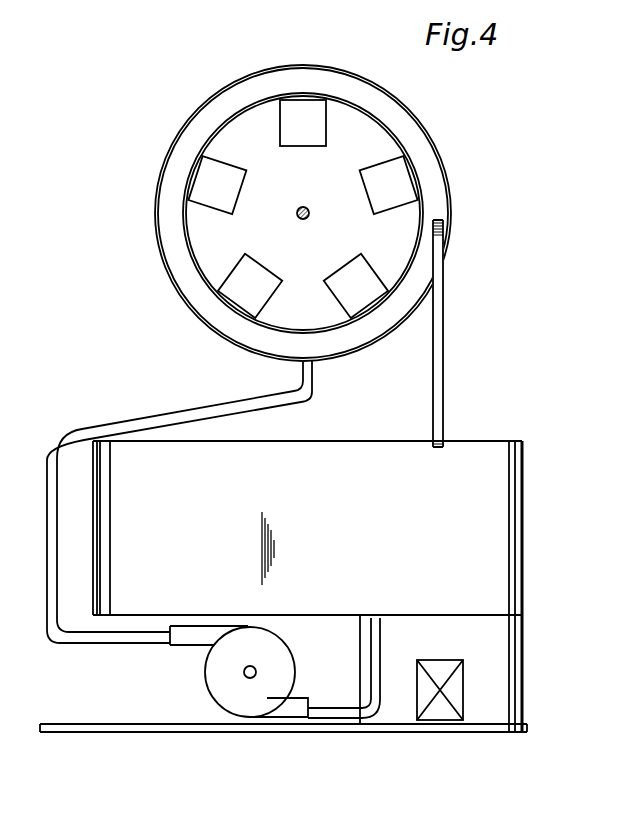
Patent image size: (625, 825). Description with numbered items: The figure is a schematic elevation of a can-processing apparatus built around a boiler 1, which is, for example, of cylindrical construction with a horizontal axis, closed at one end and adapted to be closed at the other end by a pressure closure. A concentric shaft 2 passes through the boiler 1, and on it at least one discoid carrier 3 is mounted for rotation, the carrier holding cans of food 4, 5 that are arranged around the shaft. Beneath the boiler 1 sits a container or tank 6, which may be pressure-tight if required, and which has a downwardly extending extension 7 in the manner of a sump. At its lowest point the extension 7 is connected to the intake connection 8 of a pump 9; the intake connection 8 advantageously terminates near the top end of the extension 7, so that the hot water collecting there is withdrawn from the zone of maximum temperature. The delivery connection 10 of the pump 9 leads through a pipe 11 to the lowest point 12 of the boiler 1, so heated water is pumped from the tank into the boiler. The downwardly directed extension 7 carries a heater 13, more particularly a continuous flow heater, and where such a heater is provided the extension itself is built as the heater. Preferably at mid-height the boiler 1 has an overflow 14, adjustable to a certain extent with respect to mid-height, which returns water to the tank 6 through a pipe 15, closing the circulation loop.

The boiler 1 is at (210, 100).
The shaft 2 is at (307, 208).
The discoid carrier 3 is at (248, 118).
The can of food 4 is at (315, 108).
The can of food 5 is at (405, 175).
The tank 6 is at (525, 455).
The extension 7 is at (516, 636).
The intake connection 8 is at (345, 722).
The pump 9 is at (213, 692).
The delivery connection 10 is at (185, 645).
The pipe 11 is at (122, 420).
The lowest point of the boiler 12 is at (315, 370).
The heater 13 is at (445, 715).
The overflow 14 is at (446, 228).
The pipe 15 is at (446, 355).